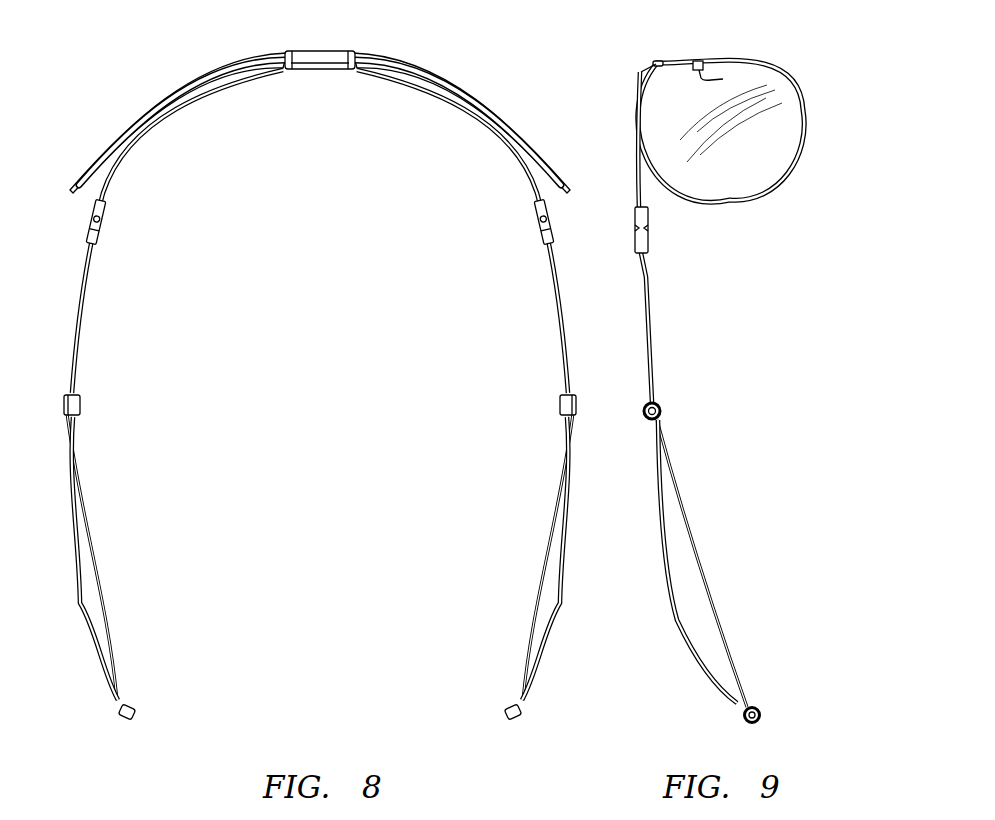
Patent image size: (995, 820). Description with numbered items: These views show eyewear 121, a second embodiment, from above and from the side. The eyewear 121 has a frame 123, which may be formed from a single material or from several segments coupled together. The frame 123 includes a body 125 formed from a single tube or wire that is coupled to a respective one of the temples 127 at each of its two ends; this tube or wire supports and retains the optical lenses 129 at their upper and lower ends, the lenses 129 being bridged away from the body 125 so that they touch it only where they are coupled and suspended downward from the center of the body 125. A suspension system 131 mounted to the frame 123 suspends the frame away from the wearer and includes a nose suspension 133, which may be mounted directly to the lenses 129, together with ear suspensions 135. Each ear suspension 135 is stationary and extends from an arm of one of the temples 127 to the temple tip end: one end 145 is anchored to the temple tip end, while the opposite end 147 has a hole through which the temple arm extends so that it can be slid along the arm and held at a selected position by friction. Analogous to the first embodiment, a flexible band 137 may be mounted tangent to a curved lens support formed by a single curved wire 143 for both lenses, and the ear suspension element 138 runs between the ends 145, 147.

In FIG. 8, the eyewear 121 is at (100, 42).
In FIG. 9, the eyewear 121 is at (698, 43).
In FIG. 9, the frame 123 is at (650, 197).
In FIG. 8, the body 125 is at (428, 103).
In FIG. 9, the body 125 is at (635, 165).
In FIG. 8, the temples 127 is at (82, 613).
In FIG. 9, the temples 127 is at (677, 620).
In FIG. 8, the optical lenses 129 is at (193, 78).
In FIG. 9, the optical lenses 129 is at (768, 95).
In FIG. 8, the suspension system 131 is at (320, 82).
In FIG. 8, the nose suspension 133 is at (293, 83).
In FIG. 8, the ear suspensions 135 is at (133, 620).
In FIG. 9, the ear suspensions 135 is at (707, 515).
In FIG. 8, the flexible band 137 is at (328, 70).
In FIG. 8, the retention cable 138 is at (100, 583).
In FIG. 9, the retention cable 138 is at (715, 590).
In FIG. 8, the single curved wire 143 is at (70, 195).
In FIG. 9, the single curved wire 143 is at (652, 182).
In FIG. 8, the one end of ear suspension 145 is at (120, 713).
In FIG. 9, the one end of ear suspension 145 is at (745, 720).
In FIG. 8, the opposite end of ear suspension 147 is at (80, 403).
In FIG. 9, the opposite end of ear suspension 147 is at (662, 407).